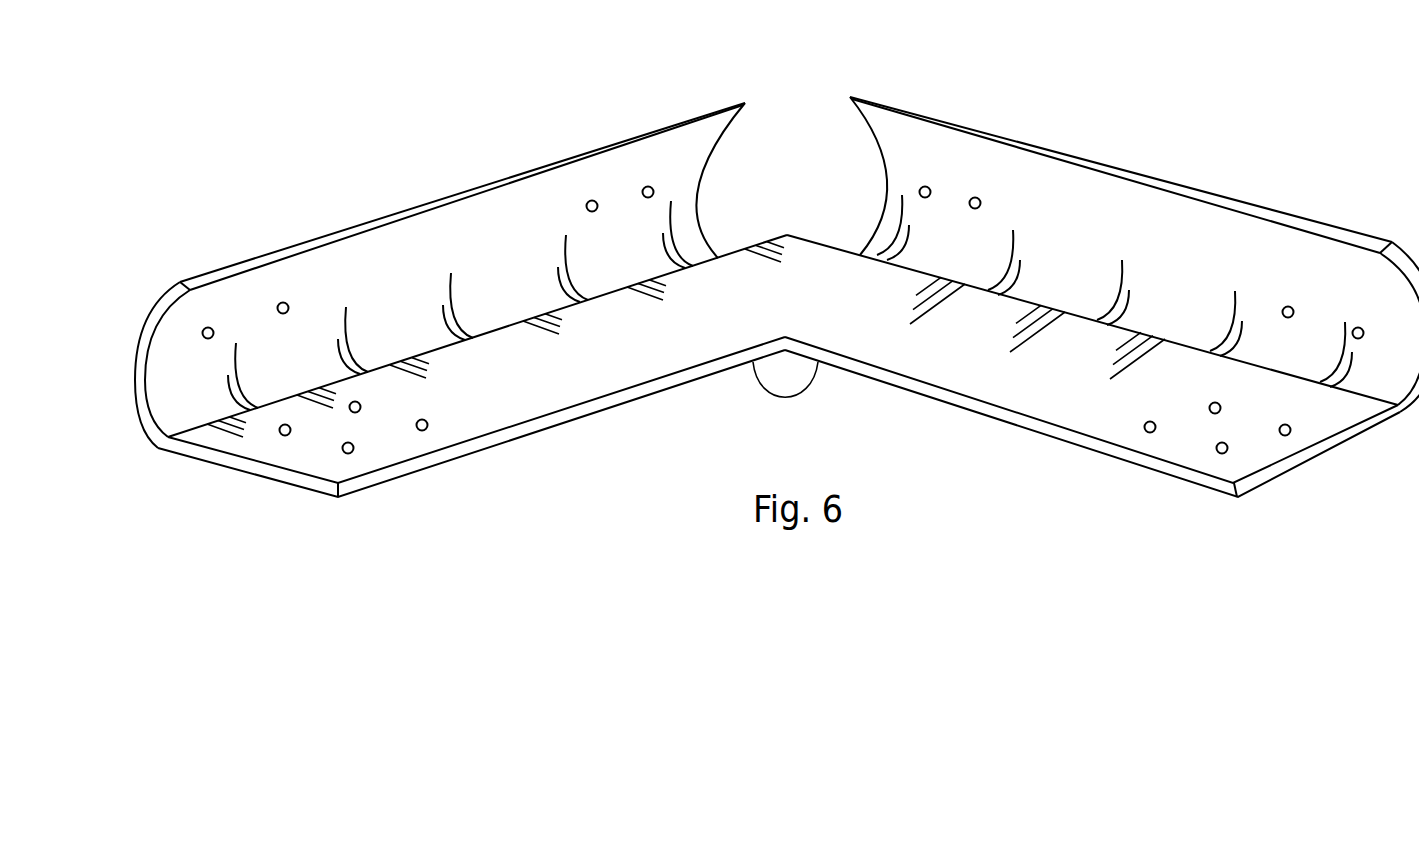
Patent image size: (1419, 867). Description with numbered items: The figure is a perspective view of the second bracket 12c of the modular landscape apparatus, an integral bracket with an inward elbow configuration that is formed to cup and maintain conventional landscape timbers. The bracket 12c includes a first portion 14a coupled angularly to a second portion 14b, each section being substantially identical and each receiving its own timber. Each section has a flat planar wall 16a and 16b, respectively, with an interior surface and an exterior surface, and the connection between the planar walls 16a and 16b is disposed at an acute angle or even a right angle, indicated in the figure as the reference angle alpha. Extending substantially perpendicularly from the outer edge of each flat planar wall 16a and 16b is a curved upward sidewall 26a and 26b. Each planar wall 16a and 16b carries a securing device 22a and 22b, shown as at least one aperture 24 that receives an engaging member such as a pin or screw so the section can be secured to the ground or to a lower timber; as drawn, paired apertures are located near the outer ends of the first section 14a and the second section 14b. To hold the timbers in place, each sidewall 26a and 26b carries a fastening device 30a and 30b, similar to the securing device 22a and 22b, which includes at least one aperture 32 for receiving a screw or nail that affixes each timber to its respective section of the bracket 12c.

The second bracket 12c is at (1313, 124).
The first portion 14a is at (382, 452).
The second portion 14b is at (1000, 402).
The flat planar wall 16a is at (607, 388).
The flat planar wall 16b is at (1100, 417).
The securing device 22a is at (434, 407).
The securing device 22b is at (1296, 446).
The aperture 24 is at (1223, 453).
The sidewall 26a is at (408, 233).
The sidewall 26b is at (1220, 230).
The fastening device 30a is at (615, 180).
The fastening device 30b is at (958, 160).
The aperture 32 is at (281, 303).